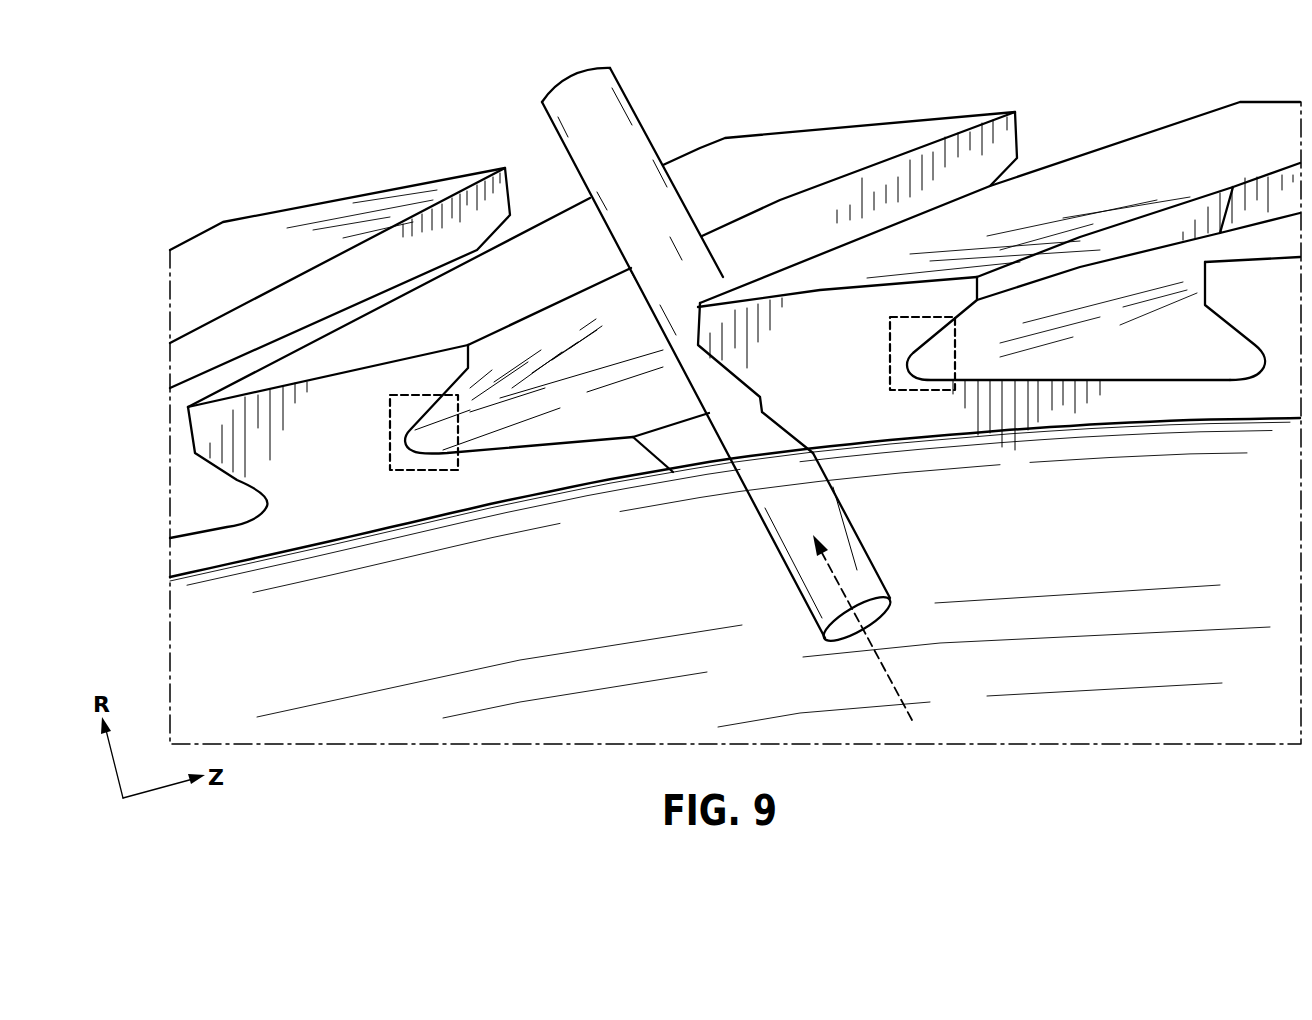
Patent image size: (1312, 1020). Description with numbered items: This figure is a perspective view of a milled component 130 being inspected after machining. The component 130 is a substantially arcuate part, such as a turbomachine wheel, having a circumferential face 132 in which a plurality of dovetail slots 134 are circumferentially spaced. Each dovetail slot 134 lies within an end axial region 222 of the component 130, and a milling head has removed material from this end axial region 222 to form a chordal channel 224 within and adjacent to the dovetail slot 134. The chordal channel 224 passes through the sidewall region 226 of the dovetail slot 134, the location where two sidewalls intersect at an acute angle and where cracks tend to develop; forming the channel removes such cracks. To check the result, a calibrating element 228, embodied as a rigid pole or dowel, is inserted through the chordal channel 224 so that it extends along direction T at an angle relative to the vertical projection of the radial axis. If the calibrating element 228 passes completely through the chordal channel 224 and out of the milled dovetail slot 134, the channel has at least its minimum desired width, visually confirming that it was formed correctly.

The component 130 is at (1024, 88).
The circumferential face 132 is at (337, 207).
The dovetail slot 134 is at (580, 417).
The end axial region 222 is at (835, 382).
The chordal channel 224 is at (685, 443).
The sidewall region 226 is at (423, 470).
The calibrating element 228 is at (617, 127).
The direction T is at (850, 596).